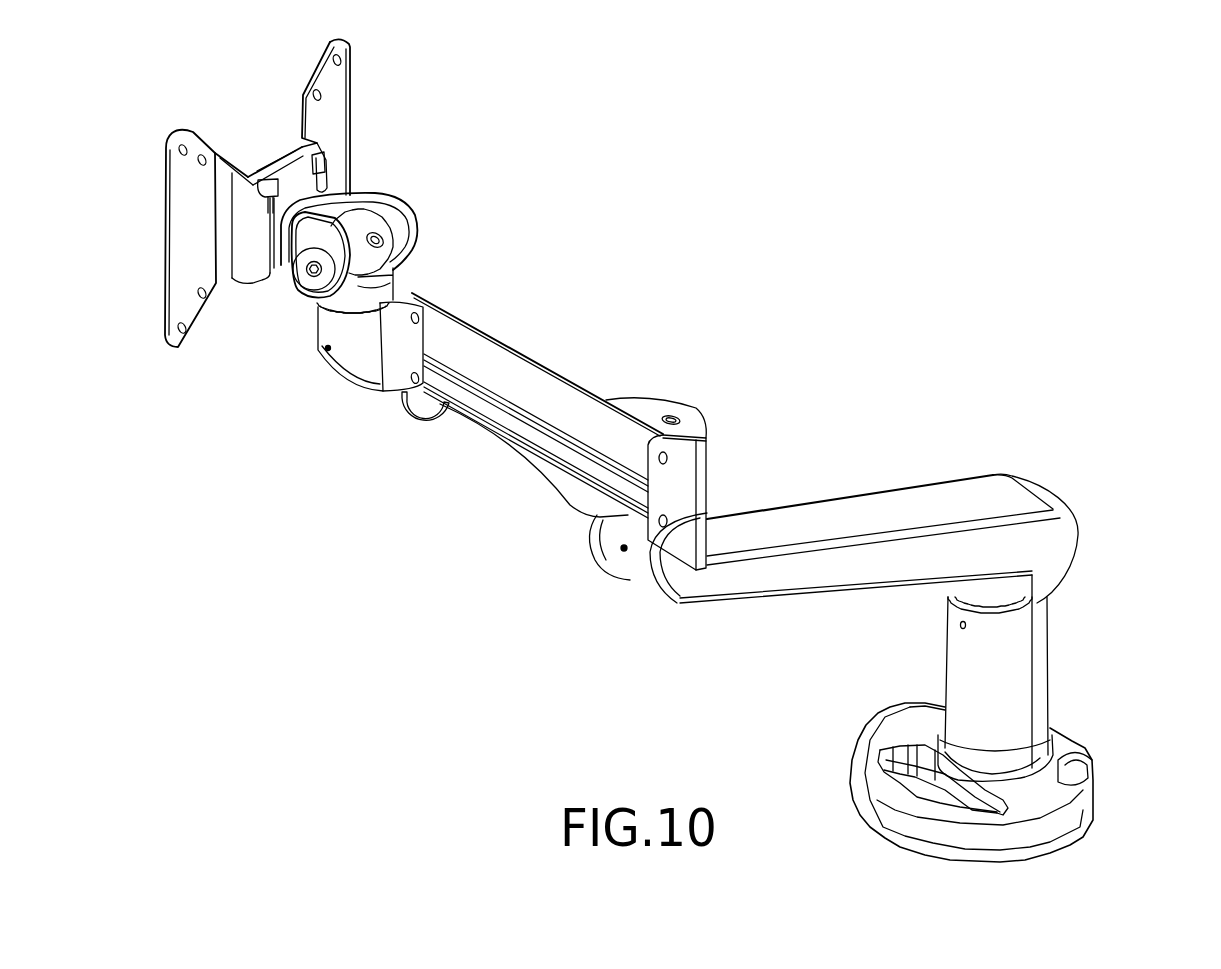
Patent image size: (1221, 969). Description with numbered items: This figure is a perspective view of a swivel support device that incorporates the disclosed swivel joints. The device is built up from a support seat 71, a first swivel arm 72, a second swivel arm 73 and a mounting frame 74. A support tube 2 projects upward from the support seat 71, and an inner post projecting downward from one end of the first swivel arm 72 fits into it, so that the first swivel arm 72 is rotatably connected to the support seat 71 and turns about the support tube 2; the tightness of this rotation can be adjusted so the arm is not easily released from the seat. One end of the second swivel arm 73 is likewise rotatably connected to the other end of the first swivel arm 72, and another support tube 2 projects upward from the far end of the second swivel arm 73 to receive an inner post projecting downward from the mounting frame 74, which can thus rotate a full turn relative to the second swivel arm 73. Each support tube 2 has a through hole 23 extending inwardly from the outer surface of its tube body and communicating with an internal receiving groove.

The support tube 2 is at (324, 325).
The through hole 23 is at (328, 352).
The support seat 71 is at (1055, 795).
The first swivel arm 72 is at (899, 505).
The second swivel arm 73 is at (535, 385).
The mounting frame 74 is at (343, 126).